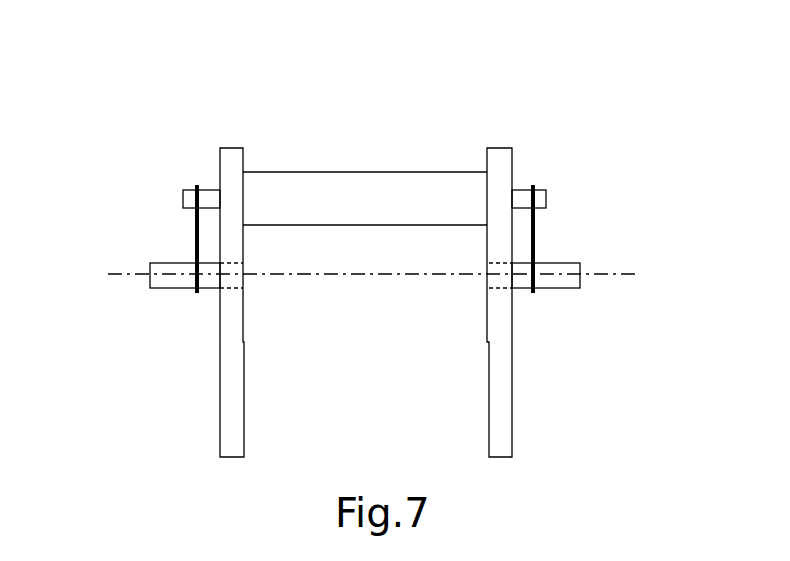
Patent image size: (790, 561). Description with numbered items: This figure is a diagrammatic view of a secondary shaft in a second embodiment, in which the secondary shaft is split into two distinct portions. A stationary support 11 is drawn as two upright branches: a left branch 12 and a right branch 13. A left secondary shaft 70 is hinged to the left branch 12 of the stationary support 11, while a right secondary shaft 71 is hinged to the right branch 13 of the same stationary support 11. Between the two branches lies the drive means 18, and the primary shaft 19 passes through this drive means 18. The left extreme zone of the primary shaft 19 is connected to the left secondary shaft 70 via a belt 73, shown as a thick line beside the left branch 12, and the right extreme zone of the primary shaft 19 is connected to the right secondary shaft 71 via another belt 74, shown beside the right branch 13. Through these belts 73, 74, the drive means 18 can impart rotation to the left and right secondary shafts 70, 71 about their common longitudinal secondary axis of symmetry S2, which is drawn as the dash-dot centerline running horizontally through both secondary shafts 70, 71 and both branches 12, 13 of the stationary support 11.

The stationary support 11 is at (510, 130).
The left branch 12 is at (235, 432).
The right branch 13 is at (496, 432).
The drive means 18 is at (322, 170).
The primary shaft 19 is at (188, 200).
The left secondary shaft 70 is at (165, 283).
The right secondary shaft 71 is at (560, 283).
The belt 73 is at (197, 247).
The belt 74 is at (533, 229).
The secondary axis of symmetry S2 is at (629, 274).